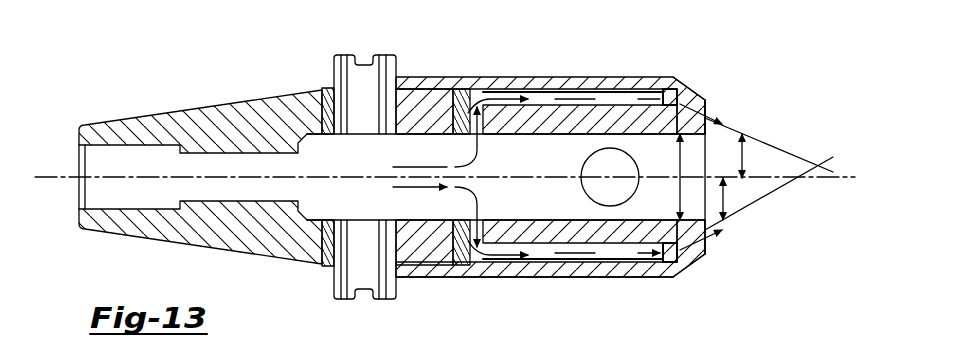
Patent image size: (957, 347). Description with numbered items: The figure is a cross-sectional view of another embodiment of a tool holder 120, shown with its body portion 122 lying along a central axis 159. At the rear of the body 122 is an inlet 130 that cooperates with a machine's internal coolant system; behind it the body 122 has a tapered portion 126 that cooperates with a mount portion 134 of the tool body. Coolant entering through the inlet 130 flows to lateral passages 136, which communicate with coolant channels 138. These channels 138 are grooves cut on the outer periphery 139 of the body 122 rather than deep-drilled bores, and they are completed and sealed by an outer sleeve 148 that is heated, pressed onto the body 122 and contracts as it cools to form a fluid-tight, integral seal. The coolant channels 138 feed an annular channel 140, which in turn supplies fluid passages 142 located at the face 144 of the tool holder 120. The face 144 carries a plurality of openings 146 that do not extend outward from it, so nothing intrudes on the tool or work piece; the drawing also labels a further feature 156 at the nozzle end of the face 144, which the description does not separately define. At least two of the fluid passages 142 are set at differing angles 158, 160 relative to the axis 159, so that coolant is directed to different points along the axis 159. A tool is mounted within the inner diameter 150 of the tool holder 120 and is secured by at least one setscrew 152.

The tool holder 120 is at (790, 91).
The body portion 122 is at (421, 93).
The tapered portion 126 is at (225, 98).
The inlet 130 is at (68, 203).
The mount portion 134 is at (360, 304).
The lateral passages 136 is at (465, 104).
The coolant channels 138 is at (627, 93).
The outer periphery 139 is at (611, 102).
The annular channel 140 is at (668, 106).
The fluid passages 142 is at (705, 108).
The face 144 is at (703, 246).
The openings 146 is at (710, 113).
The outer sleeve 148 is at (588, 272).
The inner diameter 150 is at (679, 188).
The setscrew 152 is at (578, 186).
The nozzle tip 156 is at (700, 266).
The angle 158 is at (745, 158).
The axis 159 is at (822, 180).
The angle 160 is at (726, 200).